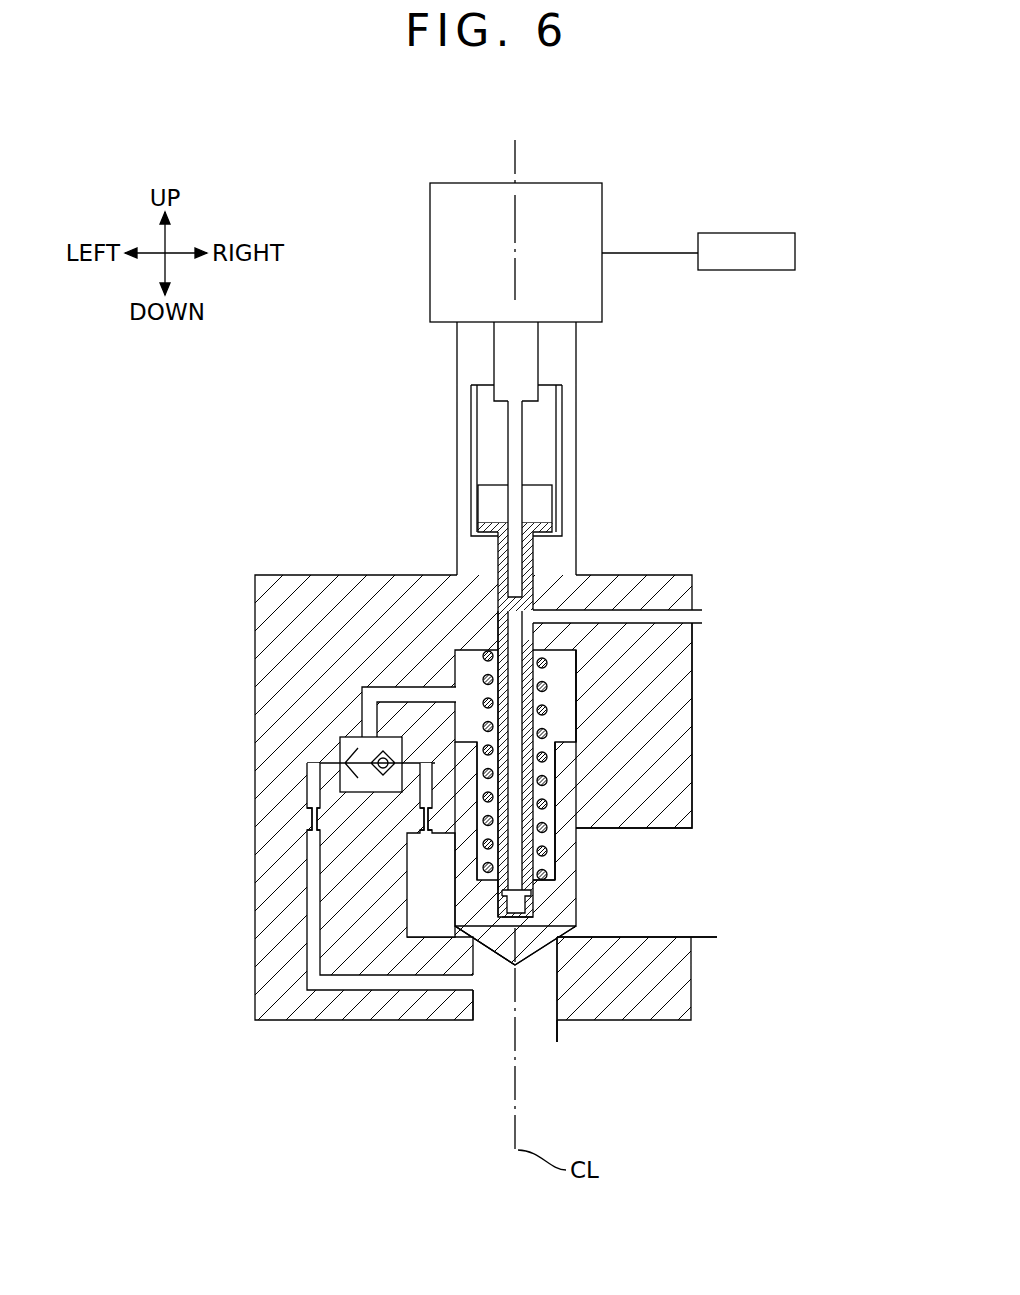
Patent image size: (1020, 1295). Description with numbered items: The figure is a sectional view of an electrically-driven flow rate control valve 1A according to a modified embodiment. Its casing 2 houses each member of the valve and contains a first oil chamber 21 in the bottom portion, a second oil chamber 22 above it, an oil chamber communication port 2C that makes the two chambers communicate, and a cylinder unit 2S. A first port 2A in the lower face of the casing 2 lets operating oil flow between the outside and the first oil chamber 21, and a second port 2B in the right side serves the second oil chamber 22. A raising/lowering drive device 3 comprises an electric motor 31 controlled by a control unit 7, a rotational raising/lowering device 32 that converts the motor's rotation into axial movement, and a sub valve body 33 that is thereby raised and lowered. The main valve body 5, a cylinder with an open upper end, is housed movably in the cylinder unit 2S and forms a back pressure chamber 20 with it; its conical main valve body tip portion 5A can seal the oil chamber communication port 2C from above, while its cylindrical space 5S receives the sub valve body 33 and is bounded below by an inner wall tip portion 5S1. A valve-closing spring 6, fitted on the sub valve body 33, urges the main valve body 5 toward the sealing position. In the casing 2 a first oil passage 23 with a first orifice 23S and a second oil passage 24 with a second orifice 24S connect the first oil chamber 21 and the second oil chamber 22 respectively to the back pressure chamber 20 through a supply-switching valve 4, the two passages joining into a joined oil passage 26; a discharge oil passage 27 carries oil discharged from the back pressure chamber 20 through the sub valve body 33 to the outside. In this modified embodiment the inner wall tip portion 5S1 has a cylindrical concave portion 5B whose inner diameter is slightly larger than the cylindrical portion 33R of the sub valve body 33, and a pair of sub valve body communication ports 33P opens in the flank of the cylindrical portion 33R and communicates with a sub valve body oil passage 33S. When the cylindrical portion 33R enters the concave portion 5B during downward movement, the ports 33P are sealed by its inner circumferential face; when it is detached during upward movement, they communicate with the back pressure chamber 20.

The electrically-driven flow rate control valve 1A is at (792, 395).
The casing 2 is at (650, 575).
The first port 2A is at (570, 1048).
The second port 2B is at (725, 822).
The oil chamber communication port 2C is at (483, 944).
The cylinder unit 2S is at (576, 700).
The raising/lowering drive device 3 is at (312, 388).
The supply-switching valve 4 is at (323, 733).
The main valve body 5 is at (570, 754).
The main valve body tip portion 5A is at (506, 925).
The concave portion 5B is at (537, 904).
The cylindrical space 5S is at (558, 792).
The inner wall tip portion 5S1 is at (556, 876).
The valve-closing spring 6 is at (562, 718).
The control unit 7 is at (770, 233).
The back pressure chamber 20 is at (556, 688).
The first oil chamber 21 is at (496, 1022).
The second oil chamber 22 is at (674, 913).
The first oil passage 23 is at (308, 950).
The first orifice 23S is at (310, 816).
The second oil passage 24 is at (425, 838).
The second orifice 24S is at (422, 812).
The joined oil passage 26 is at (385, 688).
The discharge oil passage 27 is at (655, 611).
The electric motor 31 is at (430, 312).
The rotational raising/lowering device 32 is at (476, 503).
The sub valve body 33 is at (498, 597).
The sub valve body communication port 33P is at (540, 898).
The cylindrical portion 33R is at (497, 906).
The sub valve body oil passage 33S is at (498, 672).